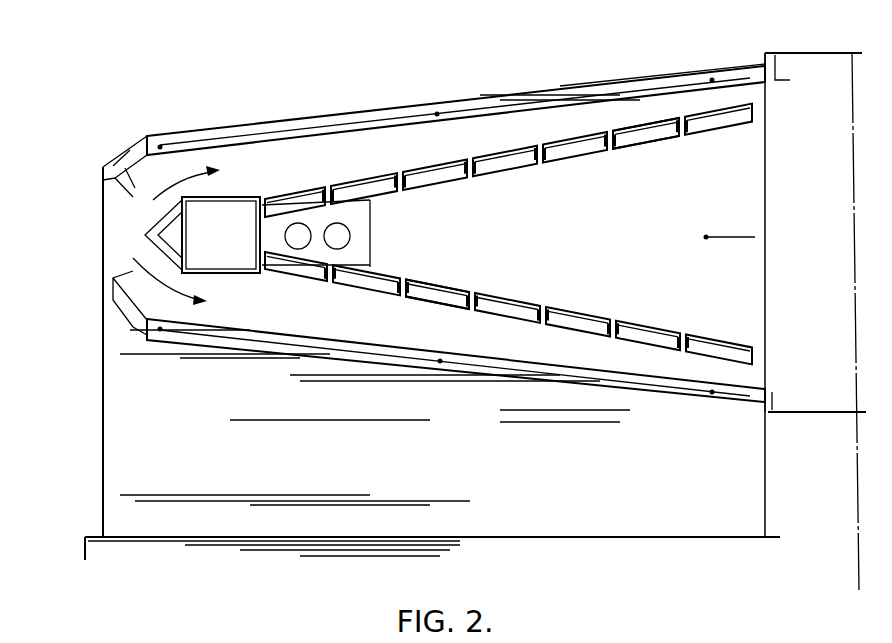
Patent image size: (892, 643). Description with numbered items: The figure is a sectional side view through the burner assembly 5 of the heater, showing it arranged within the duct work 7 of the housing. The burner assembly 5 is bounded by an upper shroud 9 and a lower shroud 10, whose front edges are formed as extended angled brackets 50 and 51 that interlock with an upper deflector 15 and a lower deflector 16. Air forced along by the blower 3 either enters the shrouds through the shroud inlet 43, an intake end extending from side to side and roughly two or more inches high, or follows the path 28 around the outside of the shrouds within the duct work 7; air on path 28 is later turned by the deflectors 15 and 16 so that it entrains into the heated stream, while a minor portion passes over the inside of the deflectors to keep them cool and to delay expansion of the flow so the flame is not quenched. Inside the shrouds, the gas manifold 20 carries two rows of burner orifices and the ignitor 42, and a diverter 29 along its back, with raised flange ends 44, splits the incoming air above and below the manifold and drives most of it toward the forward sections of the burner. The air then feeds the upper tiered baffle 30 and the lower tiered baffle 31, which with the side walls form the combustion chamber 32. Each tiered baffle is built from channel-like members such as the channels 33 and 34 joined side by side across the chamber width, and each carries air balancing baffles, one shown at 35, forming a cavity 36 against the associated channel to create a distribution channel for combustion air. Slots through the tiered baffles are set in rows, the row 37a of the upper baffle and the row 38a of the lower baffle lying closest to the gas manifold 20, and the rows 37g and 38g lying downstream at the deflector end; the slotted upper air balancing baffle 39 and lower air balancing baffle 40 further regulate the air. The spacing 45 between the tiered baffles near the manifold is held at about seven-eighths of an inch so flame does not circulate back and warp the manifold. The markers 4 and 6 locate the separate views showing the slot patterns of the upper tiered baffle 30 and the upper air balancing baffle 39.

The blower 3 is at (852, 53).
The section line 4- 4 is at (768, 134).
The burner assembly 5 is at (563, 78).
The section line 6- 6 is at (790, 82).
The duct work 7 is at (800, 374).
The upper shroud 9 is at (397, 108).
The lower shroud 10 is at (397, 366).
The upper deflector 15 is at (843, 52).
The lower deflector 16 is at (822, 411).
The gas manifold 20 is at (236, 197).
The air path around the shrouds 28 is at (182, 118).
The diverter 29 is at (160, 216).
The upper tiered baffle 30 is at (508, 167).
The lower tiered baffle 31 is at (508, 306).
The combustion chamber 32 is at (577, 238).
The channel 33 is at (438, 183).
The channel 34 is at (528, 170).
The air balancing baffle 35 is at (462, 166).
The cavity 36 is at (425, 175).
The lower row of slots of upper tiered baffle 37a is at (312, 226).
The upper row of slots of upper tiered baffle 37g is at (738, 127).
The row of slots of lower tiered baffle 38a is at (315, 266).
The row of slots of lower tiered baffle 38g is at (742, 340).
The upper air balancing baffle 39 is at (562, 132).
The lower air balancing baffle 40 is at (528, 328).
The ignitor 42 is at (299, 249).
The shroud inlet 43 is at (88, 254).
The raised flange ends 44 is at (200, 194).
The baffle spacing 45 is at (272, 232).
The extended angled bracket 50 is at (780, 68).
The extended angled bracket 51 is at (776, 402).